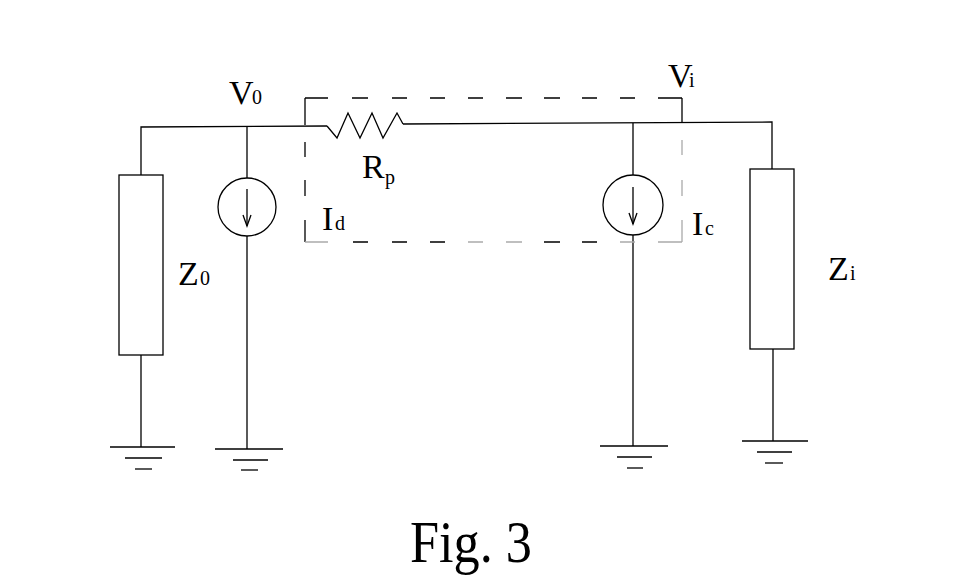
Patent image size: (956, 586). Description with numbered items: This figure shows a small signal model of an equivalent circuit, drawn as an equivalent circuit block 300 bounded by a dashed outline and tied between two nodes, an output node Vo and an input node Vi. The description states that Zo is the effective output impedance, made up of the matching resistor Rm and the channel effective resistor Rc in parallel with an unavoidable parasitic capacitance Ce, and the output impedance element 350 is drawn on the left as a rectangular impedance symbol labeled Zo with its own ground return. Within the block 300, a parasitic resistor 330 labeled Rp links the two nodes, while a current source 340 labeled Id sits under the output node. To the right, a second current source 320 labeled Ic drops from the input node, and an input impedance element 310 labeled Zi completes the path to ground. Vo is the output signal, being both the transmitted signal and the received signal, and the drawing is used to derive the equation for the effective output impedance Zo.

The equivalent circuit block (parasitic coupling model) 300 is at (440, 98).
The input impedance Zi 310 is at (794, 249).
The current source Ic 320 is at (655, 226).
The parasitic resistor Rp 330 is at (392, 137).
The current source Id 340 is at (271, 228).
The output impedance Z0 350 is at (119, 248).